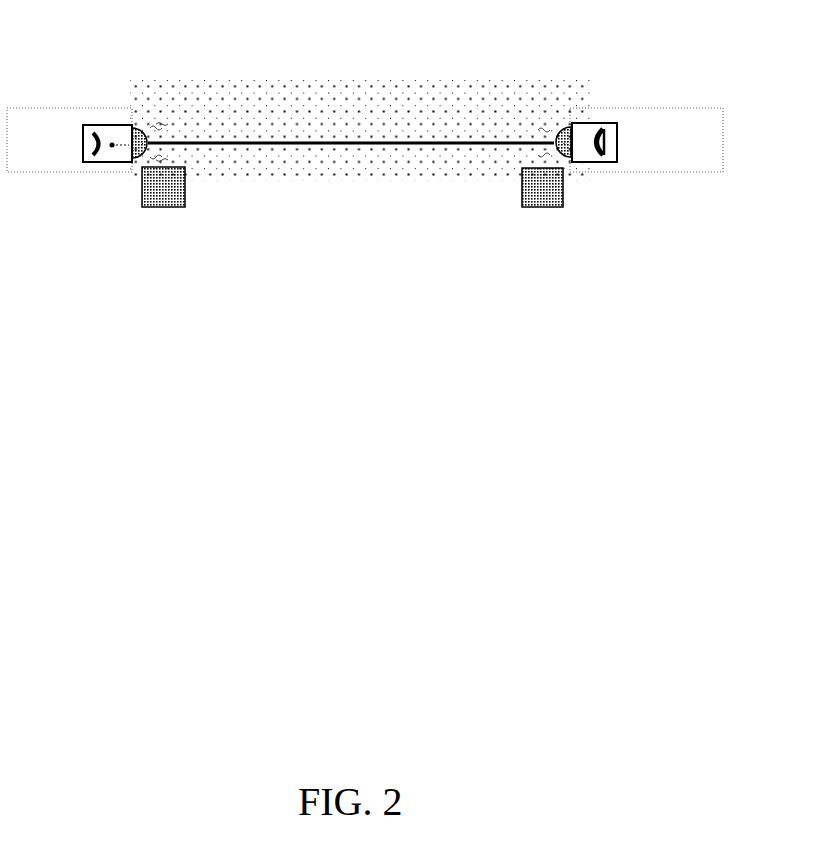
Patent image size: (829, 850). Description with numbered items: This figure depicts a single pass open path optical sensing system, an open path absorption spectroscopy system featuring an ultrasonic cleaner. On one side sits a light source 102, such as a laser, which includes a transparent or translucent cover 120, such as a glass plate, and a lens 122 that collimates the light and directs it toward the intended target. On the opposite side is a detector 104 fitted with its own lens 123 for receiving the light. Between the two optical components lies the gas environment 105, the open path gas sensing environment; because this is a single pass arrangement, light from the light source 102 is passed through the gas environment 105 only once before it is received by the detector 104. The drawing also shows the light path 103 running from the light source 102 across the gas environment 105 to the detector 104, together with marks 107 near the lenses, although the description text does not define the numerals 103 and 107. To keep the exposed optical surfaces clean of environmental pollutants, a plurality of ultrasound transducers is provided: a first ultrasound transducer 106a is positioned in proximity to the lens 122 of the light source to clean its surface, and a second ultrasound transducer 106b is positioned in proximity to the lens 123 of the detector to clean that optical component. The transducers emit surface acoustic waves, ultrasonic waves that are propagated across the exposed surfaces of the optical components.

The light source 102 is at (93, 123).
The laser beam path 103 is at (333, 147).
The detector 104 is at (618, 148).
The gas environment 105 is at (361, 110).
The first ultrasound transducer 106a is at (131, 192).
The second ultrasound transducer 106b is at (570, 205).
The scattered light / optical interference 107 is at (163, 132).
The transparent/translucent cover 120 is at (133, 128).
The lens 122 is at (140, 125).
The lens 123 is at (562, 122).